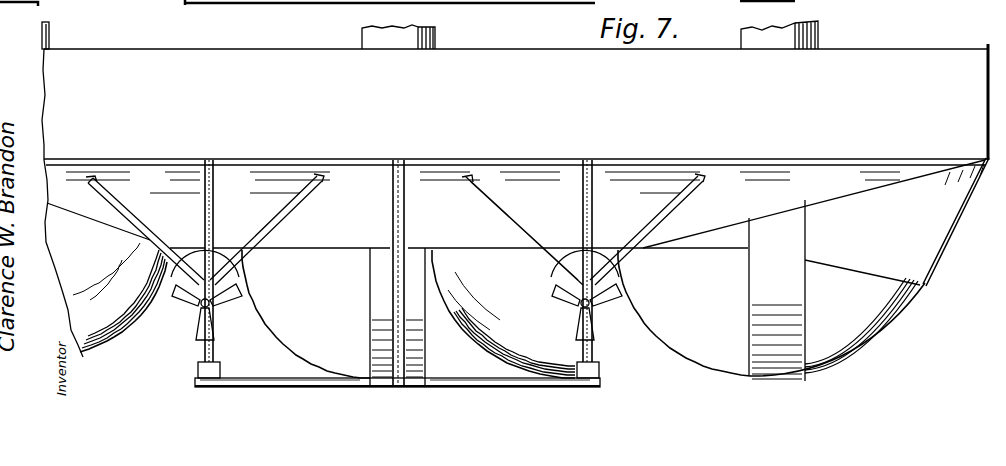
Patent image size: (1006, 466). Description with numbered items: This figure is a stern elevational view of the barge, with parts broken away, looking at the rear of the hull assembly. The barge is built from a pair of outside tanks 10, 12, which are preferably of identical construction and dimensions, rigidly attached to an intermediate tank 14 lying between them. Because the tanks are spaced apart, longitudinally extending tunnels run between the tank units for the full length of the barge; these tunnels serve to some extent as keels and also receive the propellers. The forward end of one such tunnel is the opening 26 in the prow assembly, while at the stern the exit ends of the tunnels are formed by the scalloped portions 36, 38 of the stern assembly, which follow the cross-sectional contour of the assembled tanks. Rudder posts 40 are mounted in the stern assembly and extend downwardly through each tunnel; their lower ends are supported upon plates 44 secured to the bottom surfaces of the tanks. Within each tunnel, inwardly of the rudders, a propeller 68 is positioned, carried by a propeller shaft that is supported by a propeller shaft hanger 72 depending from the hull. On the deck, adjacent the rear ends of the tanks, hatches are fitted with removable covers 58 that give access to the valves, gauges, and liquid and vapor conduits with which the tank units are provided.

The outside tank 10 is at (845, 350).
The outside tank 12 is at (112, 340).
The intermediate tank 14 is at (452, 355).
The opening 26 is at (344, 236).
The scalloped portion 36 is at (190, 250).
The scalloped portion 38 is at (603, 247).
The rudder post 40 is at (214, 204).
The plate 44 is at (262, 0).
The removable cover 58 is at (428, 34).
The propeller 68 is at (223, 302).
The propeller shaft hanger 72 is at (108, 188).